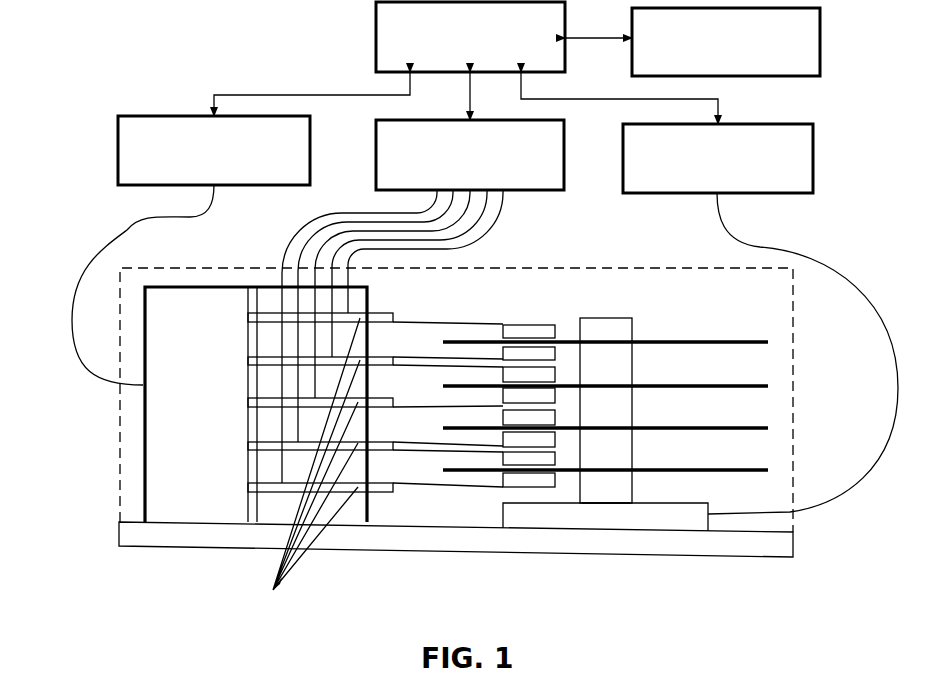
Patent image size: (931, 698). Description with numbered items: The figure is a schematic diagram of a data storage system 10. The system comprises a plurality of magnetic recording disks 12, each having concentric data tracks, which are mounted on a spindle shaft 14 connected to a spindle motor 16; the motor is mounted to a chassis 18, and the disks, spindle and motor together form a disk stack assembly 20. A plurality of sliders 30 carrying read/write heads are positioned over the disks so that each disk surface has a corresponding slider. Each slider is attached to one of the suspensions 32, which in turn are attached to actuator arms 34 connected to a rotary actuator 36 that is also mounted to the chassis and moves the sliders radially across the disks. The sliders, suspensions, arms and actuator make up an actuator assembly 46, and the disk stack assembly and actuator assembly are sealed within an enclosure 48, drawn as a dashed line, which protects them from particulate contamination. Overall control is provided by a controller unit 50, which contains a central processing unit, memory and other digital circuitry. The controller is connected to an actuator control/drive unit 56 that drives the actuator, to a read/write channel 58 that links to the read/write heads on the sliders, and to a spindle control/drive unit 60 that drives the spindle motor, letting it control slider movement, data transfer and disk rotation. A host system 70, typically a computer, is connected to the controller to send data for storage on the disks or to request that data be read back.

The data storage system 10 is at (160, 573).
The magnetic recording disks 12 is at (740, 474).
The spindle shaft 14 is at (633, 325).
The spindle motor 16 is at (632, 513).
The chassis 18 is at (805, 545).
The disk stack assembly 20 is at (568, 513).
The sliders 30 is at (537, 352).
The suspensions 32 is at (458, 400).
The actuator arms 34 is at (305, 467).
The rotary actuator 36 is at (213, 397).
The actuator assembly 46 is at (168, 487).
The enclosure 48 is at (118, 432).
The controller unit 50 is at (376, 38).
The actuator control/drive unit 56 is at (118, 150).
The read/write channel 58 is at (376, 157).
The spindle control/drive unit 60 is at (813, 162).
The host system 70 is at (820, 43).